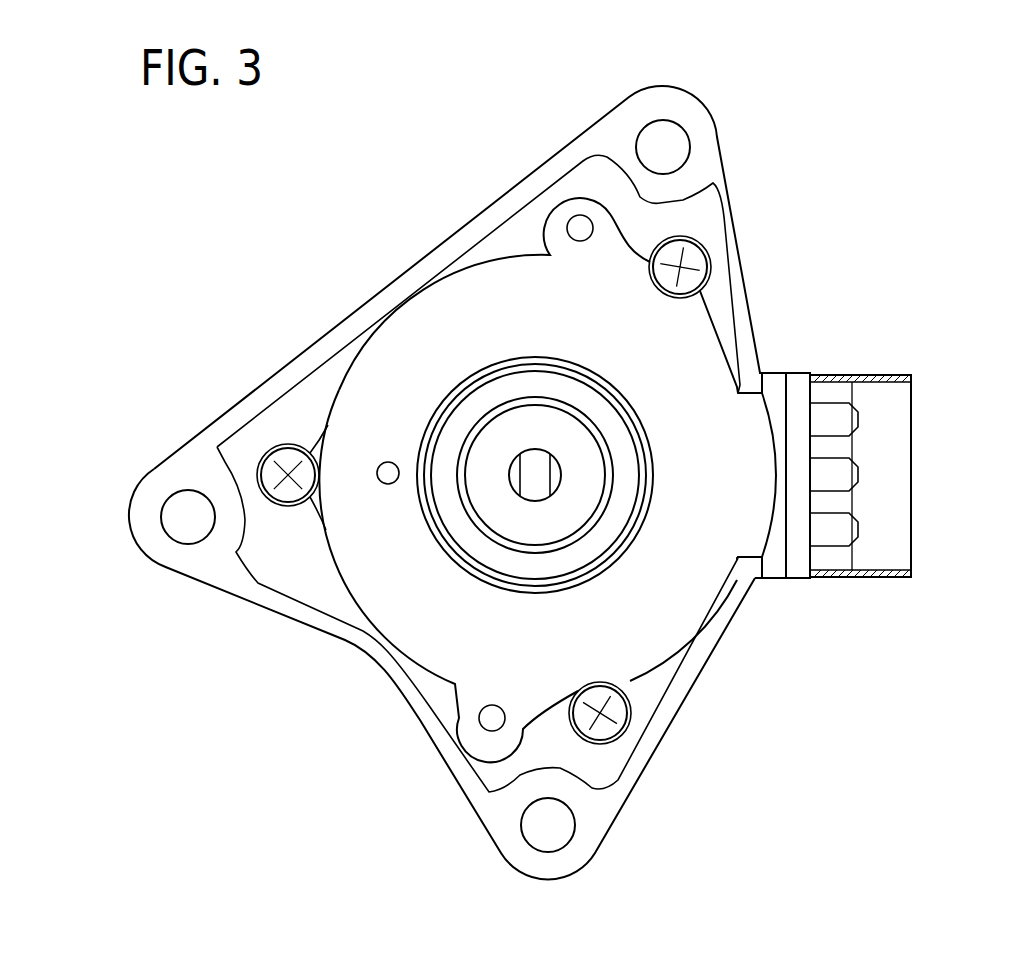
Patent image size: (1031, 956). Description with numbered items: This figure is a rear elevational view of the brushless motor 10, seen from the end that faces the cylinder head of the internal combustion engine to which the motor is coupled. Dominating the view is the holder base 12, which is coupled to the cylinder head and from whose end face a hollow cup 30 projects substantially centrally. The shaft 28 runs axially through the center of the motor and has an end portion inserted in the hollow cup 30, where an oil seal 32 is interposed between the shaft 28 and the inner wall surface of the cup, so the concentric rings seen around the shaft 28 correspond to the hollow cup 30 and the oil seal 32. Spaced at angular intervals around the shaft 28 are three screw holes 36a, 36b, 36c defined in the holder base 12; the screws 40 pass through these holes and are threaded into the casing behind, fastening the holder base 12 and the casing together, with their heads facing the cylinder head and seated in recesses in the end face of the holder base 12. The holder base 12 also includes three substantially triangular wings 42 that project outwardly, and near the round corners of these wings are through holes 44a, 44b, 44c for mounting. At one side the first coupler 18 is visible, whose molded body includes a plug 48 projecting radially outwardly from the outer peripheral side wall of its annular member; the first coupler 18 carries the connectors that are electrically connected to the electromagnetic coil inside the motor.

The brushless motor 10 is at (216, 191).
The holder base 12 is at (693, 357).
The first coupler 18 is at (890, 423).
The shaft 28 is at (545, 477).
The hollow cup 30 is at (623, 507).
The oil seal 32 is at (567, 520).
The screw hole 36a is at (633, 713).
The screw hole 36b is at (708, 250).
The screw hole 36c is at (250, 468).
The screw 40 is at (700, 277).
The wing 42 is at (400, 680).
The through hole 44a is at (547, 850).
The through hole 44b is at (660, 140).
The through hole 44c is at (185, 500).
The plug 48 is at (887, 478).